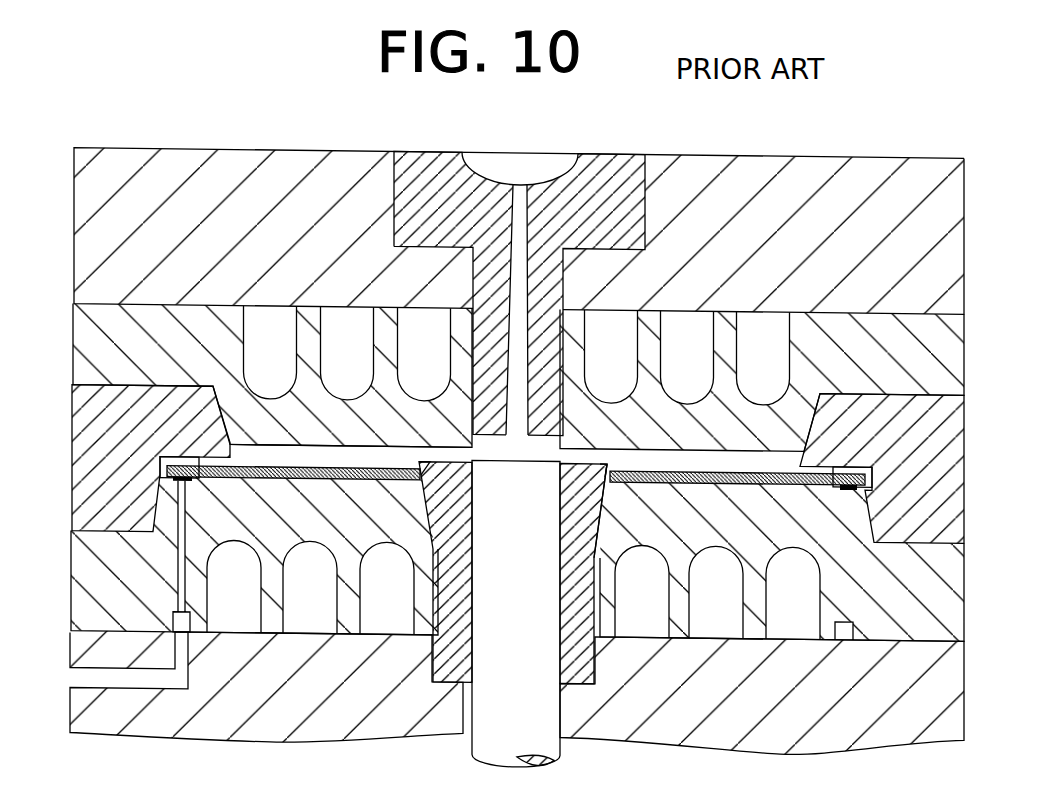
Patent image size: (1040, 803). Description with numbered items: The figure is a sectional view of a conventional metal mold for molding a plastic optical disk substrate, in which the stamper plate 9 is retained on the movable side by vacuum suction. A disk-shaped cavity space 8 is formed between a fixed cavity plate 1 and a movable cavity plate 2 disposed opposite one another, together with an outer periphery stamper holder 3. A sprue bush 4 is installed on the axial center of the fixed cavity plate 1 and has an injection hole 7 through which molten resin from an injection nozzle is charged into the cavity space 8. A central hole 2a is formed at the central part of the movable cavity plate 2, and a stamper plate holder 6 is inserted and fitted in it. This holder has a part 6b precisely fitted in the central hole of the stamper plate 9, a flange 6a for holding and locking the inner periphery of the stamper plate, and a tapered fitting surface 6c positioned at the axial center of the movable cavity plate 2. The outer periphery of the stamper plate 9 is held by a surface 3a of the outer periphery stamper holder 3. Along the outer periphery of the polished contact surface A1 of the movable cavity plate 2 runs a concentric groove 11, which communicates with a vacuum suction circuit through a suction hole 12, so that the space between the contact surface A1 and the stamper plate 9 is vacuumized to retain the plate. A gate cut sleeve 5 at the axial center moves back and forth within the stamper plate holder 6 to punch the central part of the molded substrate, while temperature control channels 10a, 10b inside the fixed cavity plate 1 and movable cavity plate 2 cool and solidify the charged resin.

The fixed cavity plate 1 is at (945, 368).
The movable cavity plate 2 is at (945, 606).
The central hole 2a is at (437, 568).
The outer periphery stamper holder 3 is at (945, 482).
The surface of outer periphery stamper holder 3a is at (828, 462).
The sprue bush 4 is at (604, 166).
The gate cut sleeve 5 is at (510, 722).
The stamper plate holder 6 is at (565, 619).
The flange 6a is at (611, 470).
The part fitted in central hole of stamper plate 6b is at (420, 484).
The tapered fitting surface 6c is at (600, 517).
The injection hole 7 is at (513, 220).
The disk-shaped cavity space 8 is at (307, 458).
The stamper plate 9 is at (704, 470).
The temperature control channel 10a is at (257, 361).
The temperature control channel 10b is at (386, 612).
The concentric groove 11 is at (192, 482).
The suction hole 12 is at (178, 584).
The polished contact surface A1 is at (341, 471).